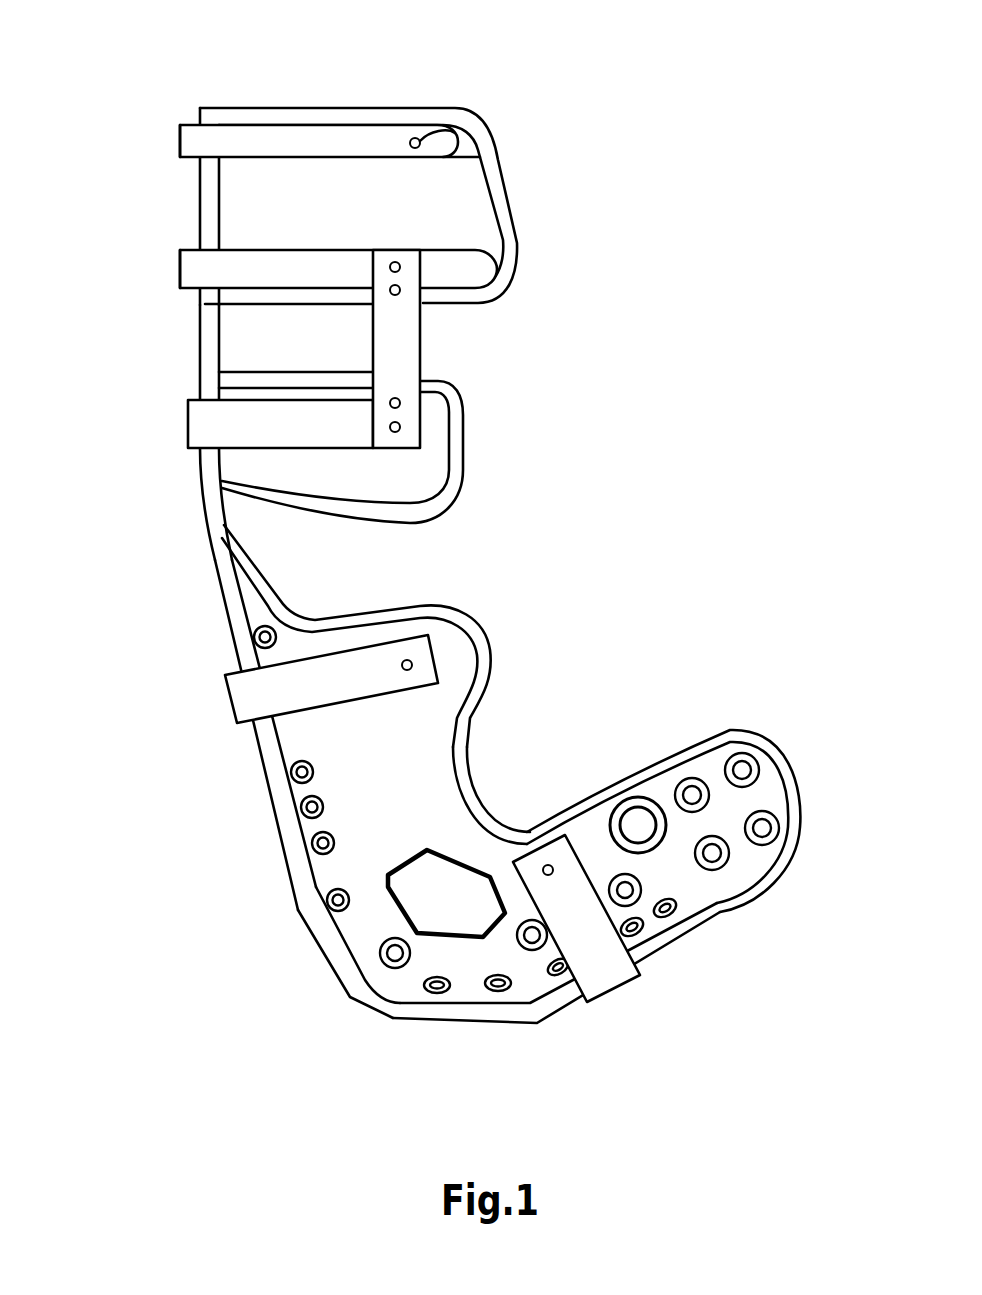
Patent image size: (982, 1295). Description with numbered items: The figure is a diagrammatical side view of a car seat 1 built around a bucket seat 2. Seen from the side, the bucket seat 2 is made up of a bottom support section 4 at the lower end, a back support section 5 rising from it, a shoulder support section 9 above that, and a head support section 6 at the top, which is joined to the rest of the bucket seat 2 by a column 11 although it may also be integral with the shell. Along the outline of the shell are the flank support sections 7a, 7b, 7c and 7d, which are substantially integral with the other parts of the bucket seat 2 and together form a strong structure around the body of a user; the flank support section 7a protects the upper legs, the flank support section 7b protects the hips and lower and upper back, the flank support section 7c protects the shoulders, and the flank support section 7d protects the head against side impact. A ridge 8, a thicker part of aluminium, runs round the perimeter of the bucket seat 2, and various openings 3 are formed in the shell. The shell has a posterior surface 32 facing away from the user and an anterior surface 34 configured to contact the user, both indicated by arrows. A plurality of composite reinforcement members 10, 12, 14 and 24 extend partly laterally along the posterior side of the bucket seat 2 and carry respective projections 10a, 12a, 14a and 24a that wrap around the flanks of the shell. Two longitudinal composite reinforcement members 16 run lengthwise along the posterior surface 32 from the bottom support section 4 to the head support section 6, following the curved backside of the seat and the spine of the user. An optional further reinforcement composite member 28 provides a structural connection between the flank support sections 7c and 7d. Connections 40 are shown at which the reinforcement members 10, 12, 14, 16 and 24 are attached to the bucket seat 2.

The car seat 1 is at (600, 145).
The bucket seat 2 is at (212, 555).
The openings 3 is at (451, 909).
The bottom support section 4 is at (522, 977).
The back support section 5 is at (297, 740).
The head support section 6 is at (237, 193).
The flank support section 7a is at (593, 830).
The flank support section 7b is at (375, 765).
The flank support section 7c is at (348, 487).
The flank support section 7d is at (383, 220).
The ridge 8 is at (463, 625).
The shoulder support section 9 is at (232, 462).
The composite reinforcement member 10 is at (200, 277).
The projection 10a is at (272, 272).
The column 11 is at (210, 345).
The composite reinforcement member 12 is at (235, 423).
The projection 12a is at (332, 423).
The composite reinforcement member 14 is at (250, 710).
The projection 14a is at (372, 675).
The longitudinal composite reinforcement member 16 is at (333, 943).
The composite reinforcement member 24 is at (605, 947).
The projection 24a is at (565, 882).
The reinforcement composite member 28 is at (388, 326).
The posterior surface 32 is at (140, 502).
The anterior surface 34 is at (537, 535).
The connections 40 is at (420, 142).